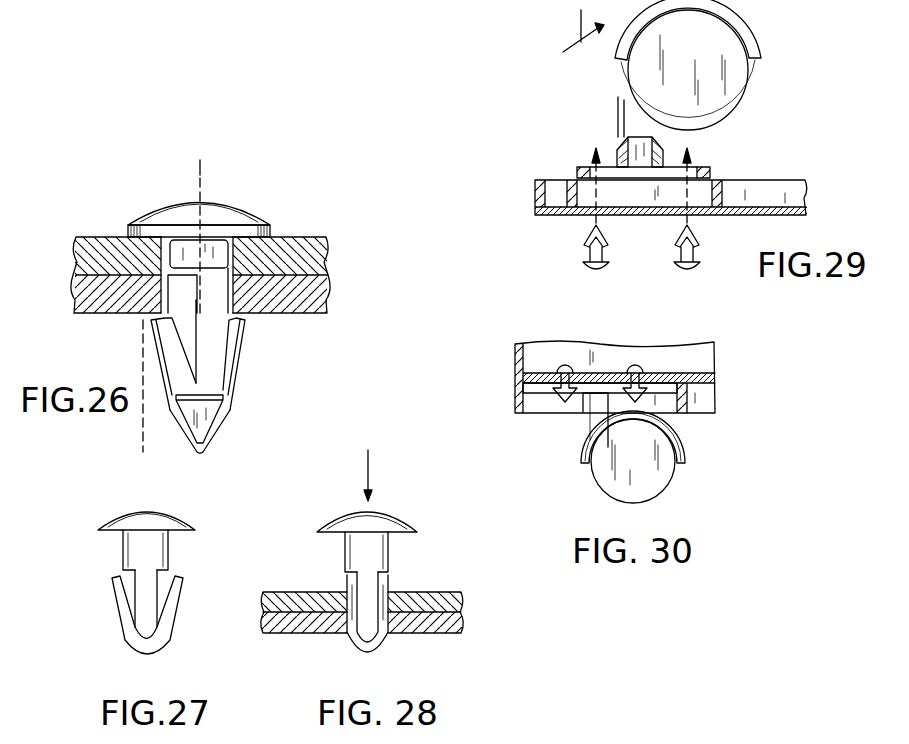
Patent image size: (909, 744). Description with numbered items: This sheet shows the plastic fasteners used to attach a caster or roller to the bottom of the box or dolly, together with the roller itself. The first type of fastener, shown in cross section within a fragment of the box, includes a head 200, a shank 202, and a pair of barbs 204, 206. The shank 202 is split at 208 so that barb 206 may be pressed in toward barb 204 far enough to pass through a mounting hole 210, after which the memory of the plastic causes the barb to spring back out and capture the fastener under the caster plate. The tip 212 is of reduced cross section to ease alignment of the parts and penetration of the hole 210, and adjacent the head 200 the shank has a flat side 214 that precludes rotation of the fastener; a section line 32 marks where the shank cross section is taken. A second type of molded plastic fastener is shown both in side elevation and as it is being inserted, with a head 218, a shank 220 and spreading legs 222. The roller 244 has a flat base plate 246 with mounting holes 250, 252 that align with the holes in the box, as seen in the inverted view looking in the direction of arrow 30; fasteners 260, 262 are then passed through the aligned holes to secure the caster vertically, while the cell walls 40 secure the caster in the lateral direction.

In FIG. 26, the head 200 is at (214, 325).
In FIG. 26, the shank 202 is at (236, 310).
In FIG. 26, the barb 204 is at (247, 327).
In FIG. 26, the barb 206 is at (157, 325).
In FIG. 26, the split 208 is at (215, 370).
In FIG. 26, the mounting hole 210 is at (238, 282).
In FIG. 26, the tip 212 is at (218, 433).
In FIG. 26, the flat side 214 is at (182, 250).
In FIG. 26, the section line 32 is at (224, 165).
In FIG. 27, the head 218 is at (128, 518).
In FIG. 28, the head 218 is at (387, 512).
In FIG. 27, the shank 220 is at (170, 549).
In FIG. 28, the shank 220 is at (390, 548).
In FIG. 27, the legs 222 is at (112, 583).
In FIG. 28, the legs 222 is at (347, 584).
In FIG. 29, the view arrow 30 is at (570, 42).
In FIG. 29, the cell walls 40 is at (552, 200).
In FIG. 30, the cell walls 40 is at (515, 397).
In FIG. 29, the roller 244 is at (722, 53).
In FIG. 30, the roller 244 is at (657, 480).
In FIG. 29, the base plate 246 is at (700, 165).
In FIG. 30, the base plate 246 is at (545, 393).
In FIG. 29, the mounting hole 250 is at (700, 153).
In FIG. 30, the mounting hole 250 is at (633, 428).
In FIG. 29, the mounting hole 252 is at (605, 158).
In FIG. 29, the fastener 260 is at (583, 258).
In FIG. 29, the fastener 262 is at (697, 253).